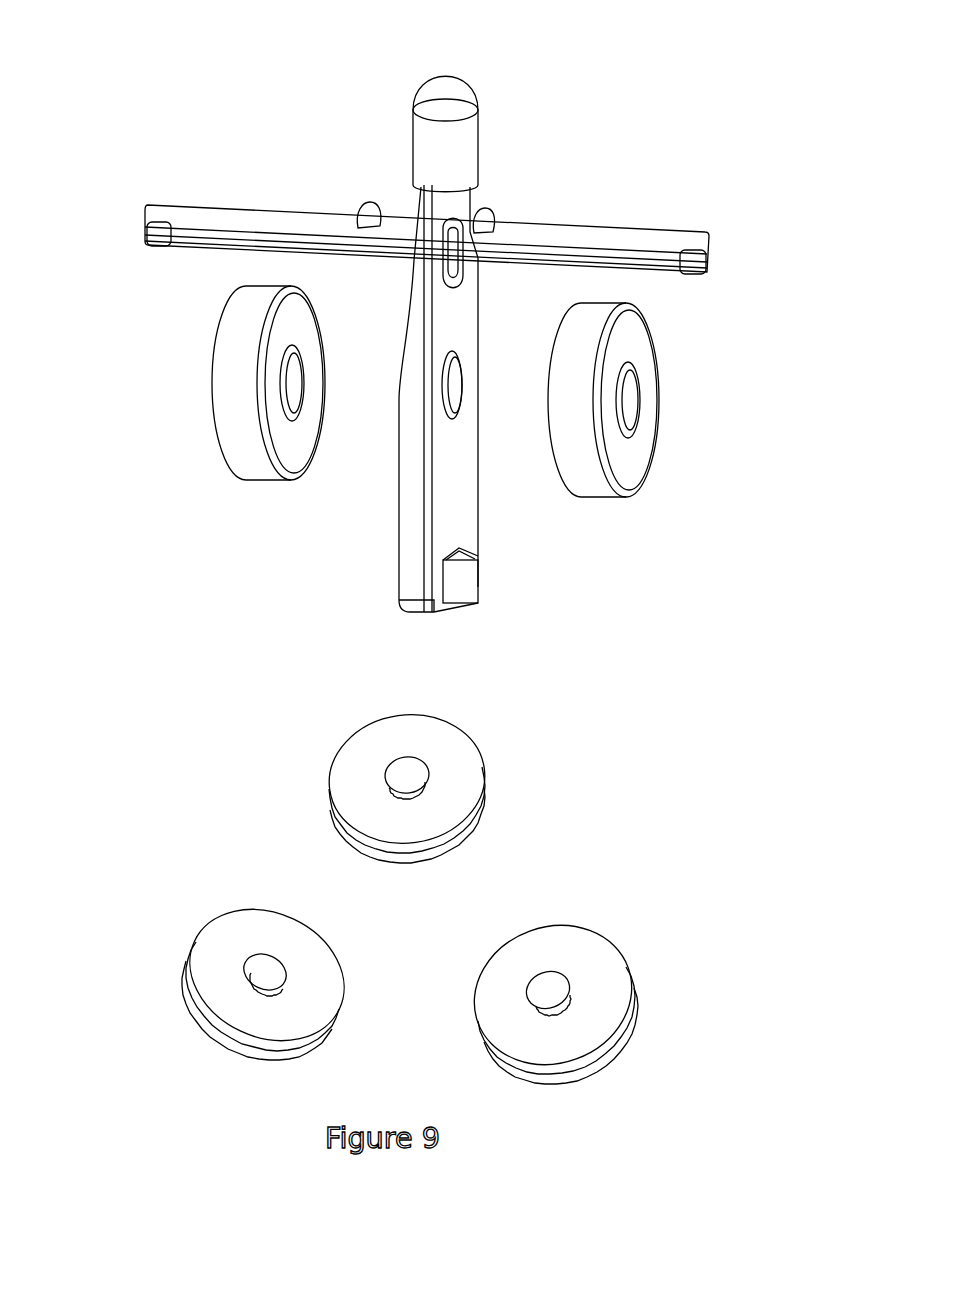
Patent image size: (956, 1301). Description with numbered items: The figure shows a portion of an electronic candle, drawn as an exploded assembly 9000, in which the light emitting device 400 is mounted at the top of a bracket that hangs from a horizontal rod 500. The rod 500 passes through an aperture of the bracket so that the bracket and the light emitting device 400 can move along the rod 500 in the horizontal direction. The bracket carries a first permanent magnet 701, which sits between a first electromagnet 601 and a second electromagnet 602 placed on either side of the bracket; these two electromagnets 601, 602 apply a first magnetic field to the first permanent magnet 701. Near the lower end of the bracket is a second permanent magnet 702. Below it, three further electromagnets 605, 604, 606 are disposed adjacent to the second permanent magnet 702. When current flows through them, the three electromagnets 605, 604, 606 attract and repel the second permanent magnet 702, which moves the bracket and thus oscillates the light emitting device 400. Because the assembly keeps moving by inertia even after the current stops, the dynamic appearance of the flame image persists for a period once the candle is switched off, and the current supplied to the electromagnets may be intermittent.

The assembly 9000 is at (220, 70).
The light emitting device 400 is at (486, 131).
The rod 500 is at (216, 200).
The first electromagnet 601 is at (664, 403).
The second electromagnet 602 is at (203, 382).
The electromagnet 604 is at (190, 944).
The electromagnet 605 is at (494, 769).
The electromagnet 606 is at (634, 981).
The first permanent magnet 701 is at (447, 406).
The second permanent magnet 702 is at (483, 591).